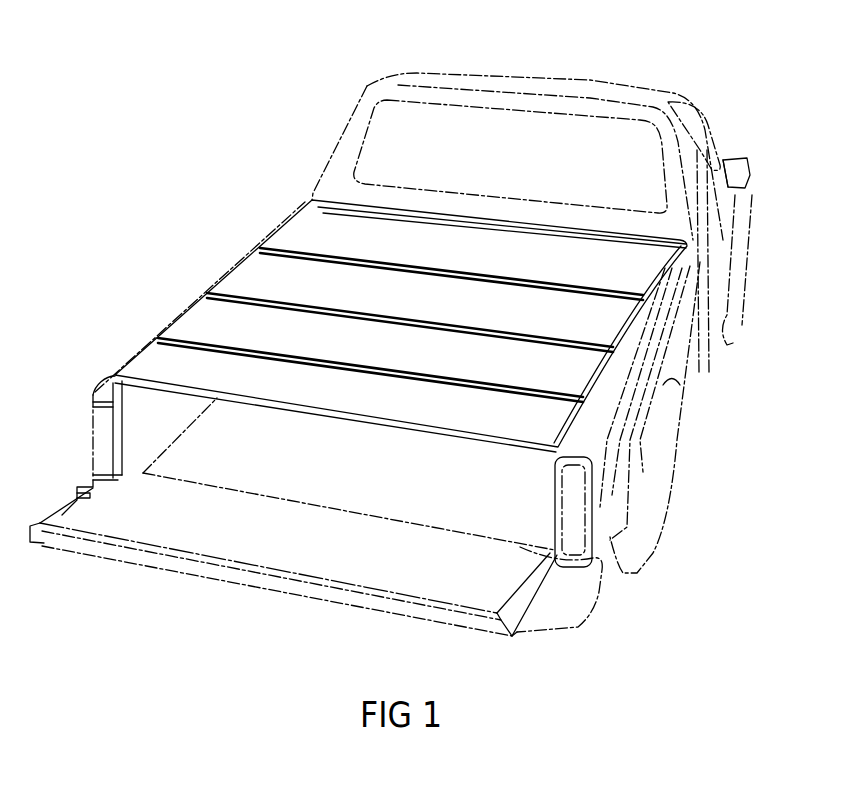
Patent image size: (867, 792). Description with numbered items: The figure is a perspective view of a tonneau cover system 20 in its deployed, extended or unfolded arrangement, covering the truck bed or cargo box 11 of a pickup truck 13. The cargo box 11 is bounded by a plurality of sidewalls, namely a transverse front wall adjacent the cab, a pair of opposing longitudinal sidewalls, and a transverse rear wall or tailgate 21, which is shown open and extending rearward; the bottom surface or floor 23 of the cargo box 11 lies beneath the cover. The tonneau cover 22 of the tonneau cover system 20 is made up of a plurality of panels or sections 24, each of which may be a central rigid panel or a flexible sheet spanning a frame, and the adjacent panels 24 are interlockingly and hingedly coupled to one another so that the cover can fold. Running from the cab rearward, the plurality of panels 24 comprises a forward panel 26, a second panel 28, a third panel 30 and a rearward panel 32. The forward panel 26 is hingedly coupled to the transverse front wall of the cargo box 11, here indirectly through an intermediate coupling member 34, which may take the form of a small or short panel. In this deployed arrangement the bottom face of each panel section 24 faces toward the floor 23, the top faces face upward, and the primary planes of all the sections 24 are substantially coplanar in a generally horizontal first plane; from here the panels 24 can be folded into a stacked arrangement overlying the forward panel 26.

The cargo box 11 is at (383, 470).
The pickup truck 13 is at (368, 87).
The tonneau cover system 20 is at (182, 165).
The tailgate 21 is at (150, 556).
The tonneau cover 22 is at (168, 390).
The floor 23 is at (485, 488).
The panels 24 is at (293, 222).
The forward panel 26 is at (686, 244).
The second panel 28 is at (612, 322).
The third panel 30 is at (583, 380).
The rearward panel 32 is at (562, 418).
The intermediate coupling member 34 is at (643, 266).